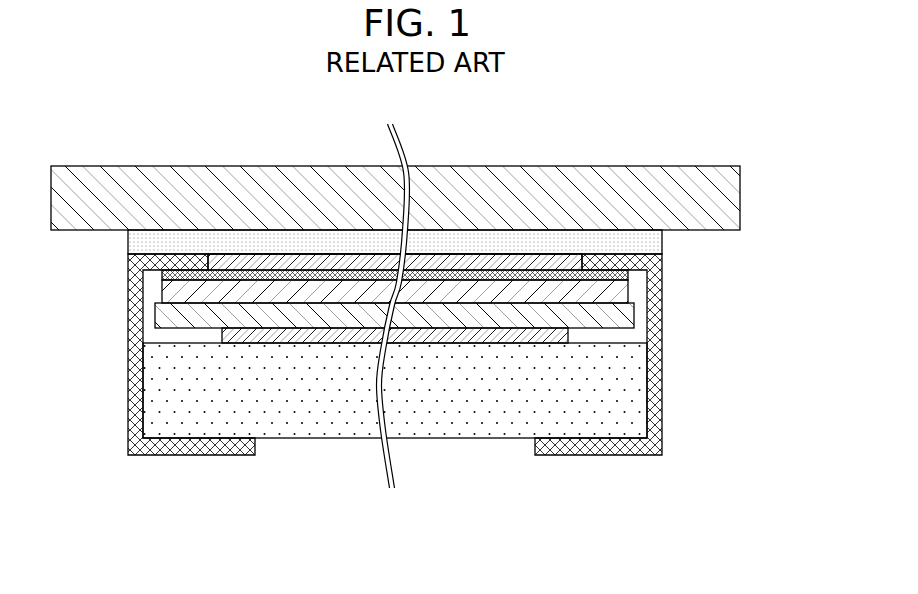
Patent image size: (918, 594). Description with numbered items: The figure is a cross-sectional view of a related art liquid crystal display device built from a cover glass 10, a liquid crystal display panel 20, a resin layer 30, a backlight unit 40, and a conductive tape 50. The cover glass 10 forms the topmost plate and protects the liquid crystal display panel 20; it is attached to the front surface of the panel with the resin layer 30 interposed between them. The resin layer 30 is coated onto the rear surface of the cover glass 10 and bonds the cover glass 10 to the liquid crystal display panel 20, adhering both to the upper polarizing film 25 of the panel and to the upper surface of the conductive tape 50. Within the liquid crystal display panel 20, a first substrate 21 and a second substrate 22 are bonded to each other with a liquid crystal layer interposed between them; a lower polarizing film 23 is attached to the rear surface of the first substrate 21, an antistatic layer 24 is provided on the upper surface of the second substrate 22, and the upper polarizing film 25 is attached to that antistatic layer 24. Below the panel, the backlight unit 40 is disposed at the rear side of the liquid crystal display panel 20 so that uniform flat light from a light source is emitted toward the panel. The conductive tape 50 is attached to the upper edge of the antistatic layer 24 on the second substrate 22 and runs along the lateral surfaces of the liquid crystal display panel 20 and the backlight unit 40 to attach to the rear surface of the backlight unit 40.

The cover glass 10 is at (730, 196).
The liquid crystal display panel 20 is at (457, 313).
The first substrate 21 is at (623, 317).
The second substrate 22 is at (623, 293).
The lower polarizing film 23 is at (555, 338).
The antistatic layer 24 is at (630, 275).
The upper polarizing film 25 is at (573, 262).
The resin layer 30 is at (655, 240).
The backlight unit 40 is at (298, 422).
The conductive tape 50 is at (135, 375).